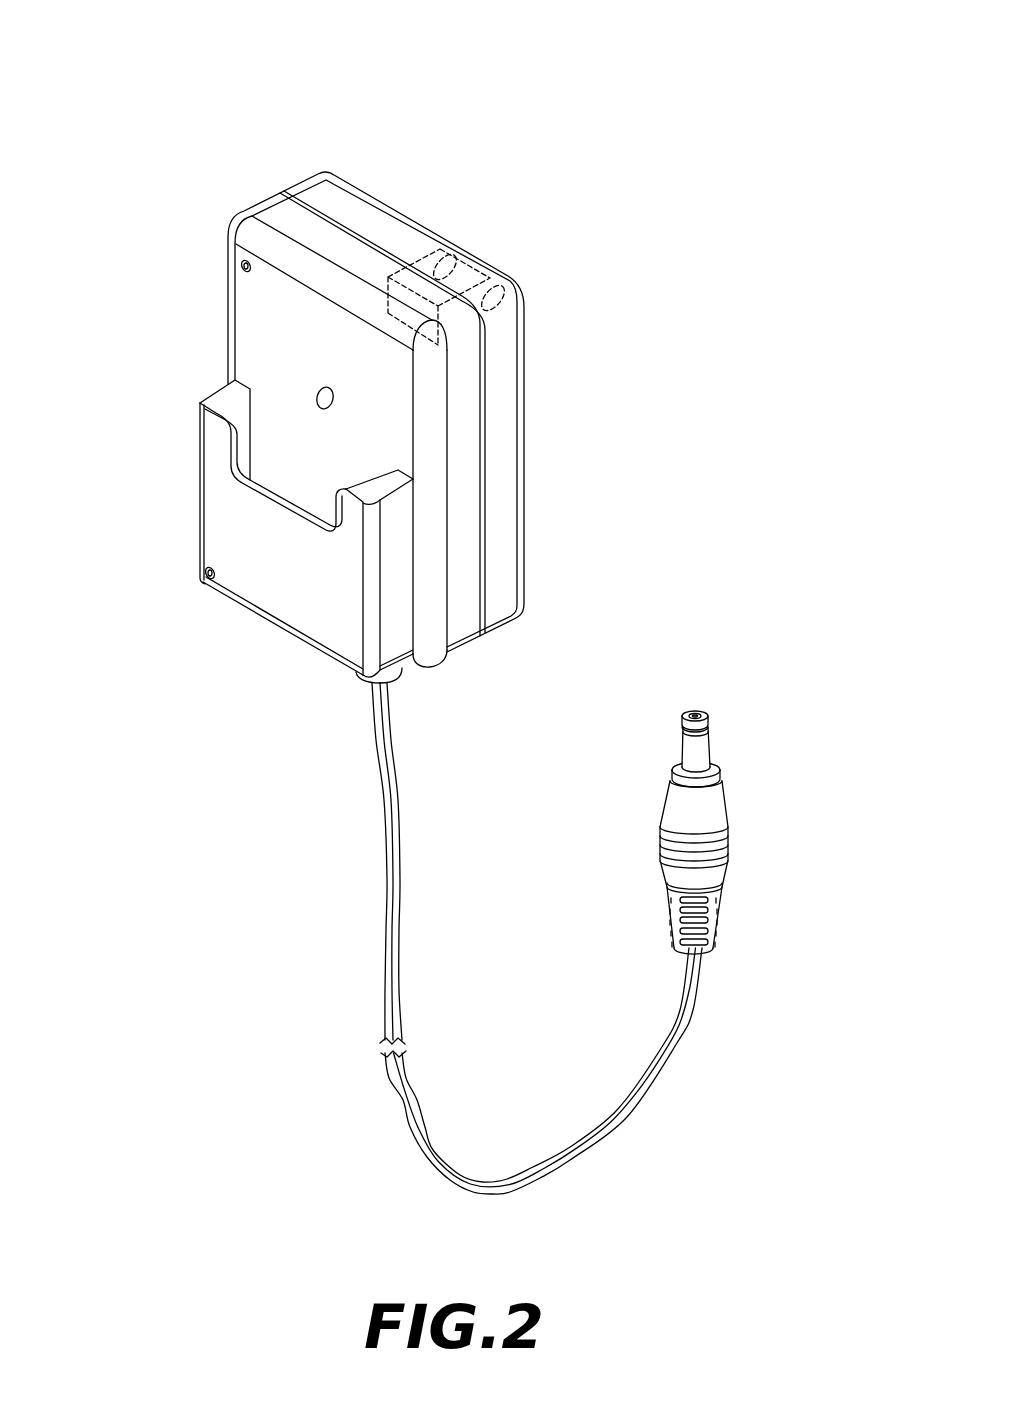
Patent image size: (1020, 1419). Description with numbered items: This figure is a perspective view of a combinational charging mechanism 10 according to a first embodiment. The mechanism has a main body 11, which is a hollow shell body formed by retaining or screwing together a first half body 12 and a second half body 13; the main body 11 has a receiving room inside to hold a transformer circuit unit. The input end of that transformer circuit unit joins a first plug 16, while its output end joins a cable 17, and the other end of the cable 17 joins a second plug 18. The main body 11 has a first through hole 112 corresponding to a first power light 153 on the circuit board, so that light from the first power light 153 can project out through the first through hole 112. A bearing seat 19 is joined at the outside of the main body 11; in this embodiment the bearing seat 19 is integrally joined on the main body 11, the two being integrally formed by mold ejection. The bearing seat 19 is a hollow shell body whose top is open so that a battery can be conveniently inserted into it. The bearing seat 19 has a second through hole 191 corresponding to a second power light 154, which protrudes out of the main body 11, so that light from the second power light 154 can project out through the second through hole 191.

The combinational charging mechanism 10 is at (355, 108).
The main body 11 is at (273, 172).
The first half body 12 is at (243, 347).
The second half body 13 is at (325, 187).
The first plug 16 is at (527, 315).
The cable 17 is at (617, 1127).
The second plug 18 is at (720, 860).
The bearing seat 19 is at (215, 533).
The first through hole 112 is at (243, 270).
The first power light 153 is at (242, 277).
The second power light 154 is at (203, 587).
The second through hole 191 is at (205, 578).